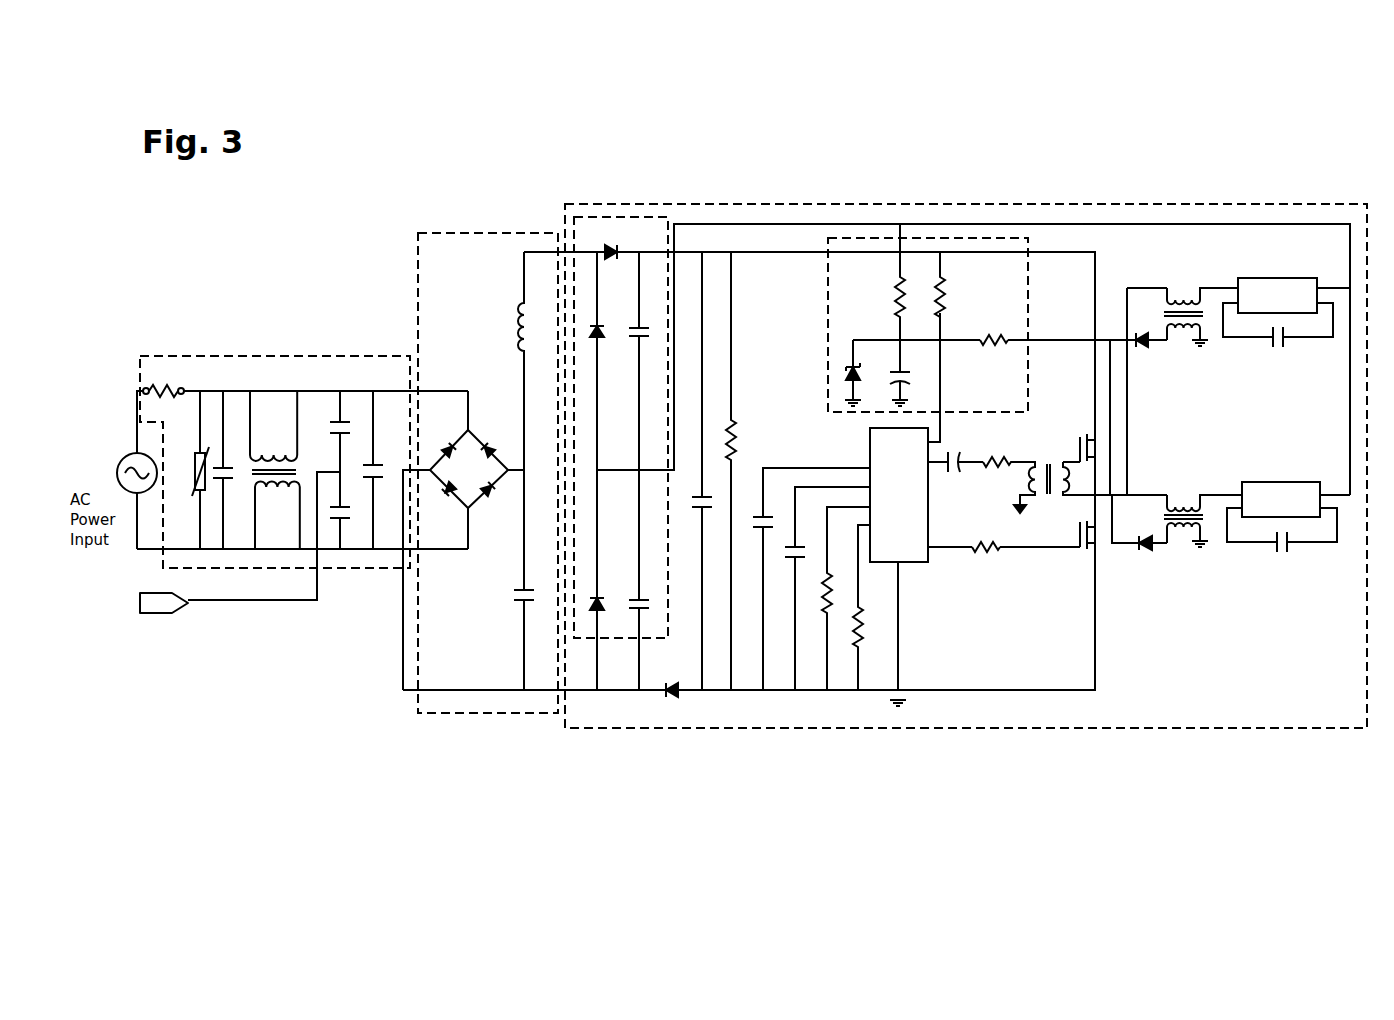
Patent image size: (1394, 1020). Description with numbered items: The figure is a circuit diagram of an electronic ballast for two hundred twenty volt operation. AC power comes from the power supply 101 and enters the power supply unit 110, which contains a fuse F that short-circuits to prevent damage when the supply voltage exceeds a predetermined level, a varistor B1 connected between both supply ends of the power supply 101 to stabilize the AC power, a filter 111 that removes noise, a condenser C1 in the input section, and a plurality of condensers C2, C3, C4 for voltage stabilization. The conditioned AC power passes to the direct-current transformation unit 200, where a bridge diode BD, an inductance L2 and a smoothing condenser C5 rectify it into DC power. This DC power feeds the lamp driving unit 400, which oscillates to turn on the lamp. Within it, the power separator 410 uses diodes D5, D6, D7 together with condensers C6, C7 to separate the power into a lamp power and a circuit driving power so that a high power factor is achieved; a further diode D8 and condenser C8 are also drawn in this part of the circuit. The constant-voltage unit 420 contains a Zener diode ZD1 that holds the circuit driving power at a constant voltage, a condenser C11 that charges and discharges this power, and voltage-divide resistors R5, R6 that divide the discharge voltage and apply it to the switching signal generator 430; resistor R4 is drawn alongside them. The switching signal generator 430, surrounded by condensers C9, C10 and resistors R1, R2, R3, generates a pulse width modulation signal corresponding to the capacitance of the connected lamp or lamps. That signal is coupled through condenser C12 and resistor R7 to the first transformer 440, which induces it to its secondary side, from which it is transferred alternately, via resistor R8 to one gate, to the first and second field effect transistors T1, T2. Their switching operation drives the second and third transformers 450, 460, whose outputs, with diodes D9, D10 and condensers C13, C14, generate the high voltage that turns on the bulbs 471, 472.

The power supply 101 is at (125, 455).
The power supply unit 110 is at (273, 352).
The filter 111 is at (273, 441).
The direct-current transformation unit 200 is at (485, 231).
The lamp driving unit 400 is at (960, 202).
The power separator 410 is at (617, 215).
The constant-voltage unit 420 is at (828, 326).
The switching signal generator 430 is at (870, 442).
The first transformer 440 is at (1047, 458).
The second transformer 450 is at (1182, 295).
The third transformer 460 is at (1185, 500).
The bulb 471 is at (1277, 277).
The bulb 472 is at (1280, 480).
The fuse F is at (163, 382).
The varistor B1 is at (190, 470).
The bridge diode BD is at (477, 433).
The inductance L2 is at (535, 361).
The first field effect transistor T1 is at (1089, 437).
The second field effect transistor T2 is at (1072, 535).
The Zener diode ZD1 is at (869, 373).
The condenser C1 is at (231, 470).
The condenser C2 is at (347, 431).
The condenser C3 is at (347, 510).
The condenser C4 is at (381, 470).
The smoothing condenser C5 is at (537, 580).
The condenser C6 is at (645, 320).
The condenser C7 is at (647, 591).
The condenser C8 is at (709, 471).
The condenser C9 is at (811, 579).
The condenser C10 is at (827, 588).
The condenser C11 is at (912, 373).
The condenser C12 is at (951, 473).
The condenser C13 is at (1278, 336).
The condenser C14 is at (1282, 541).
The diode D5 is at (606, 321).
The diode D6 is at (608, 594).
The diode D7 is at (611, 242).
The diode D8 is at (674, 679).
The diode D9 is at (1149, 352).
The diode D10 is at (1143, 557).
The resistor R1 is at (742, 471).
The resistor R2 is at (846, 598).
The resistor R3 is at (869, 607).
The resistor R4 is at (911, 282).
The voltage-divide resistor R5 is at (951, 296).
The voltage-divide resistor R6 is at (994, 331).
The resistor R7 is at (1008, 451).
The resistor R8 is at (986, 537).